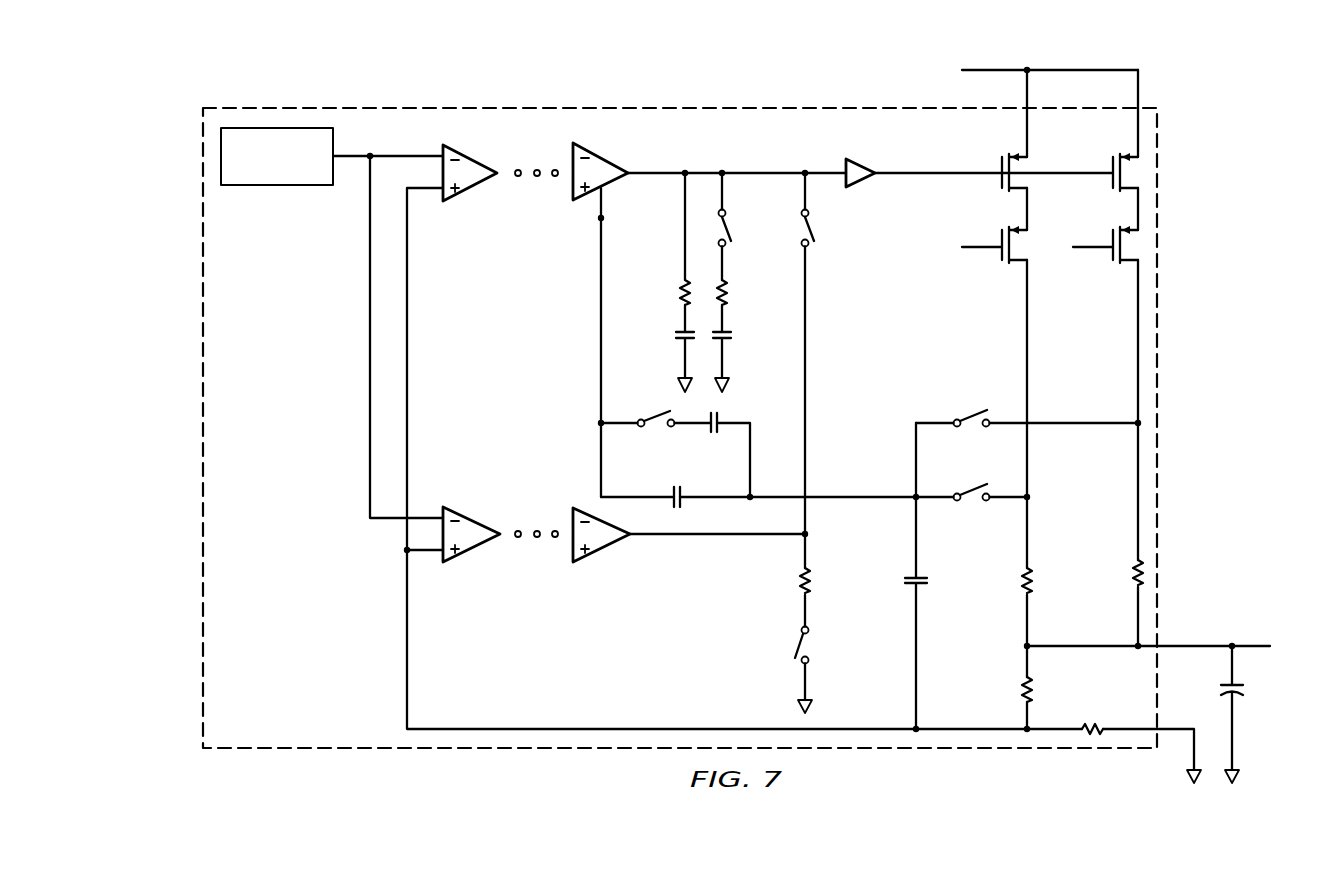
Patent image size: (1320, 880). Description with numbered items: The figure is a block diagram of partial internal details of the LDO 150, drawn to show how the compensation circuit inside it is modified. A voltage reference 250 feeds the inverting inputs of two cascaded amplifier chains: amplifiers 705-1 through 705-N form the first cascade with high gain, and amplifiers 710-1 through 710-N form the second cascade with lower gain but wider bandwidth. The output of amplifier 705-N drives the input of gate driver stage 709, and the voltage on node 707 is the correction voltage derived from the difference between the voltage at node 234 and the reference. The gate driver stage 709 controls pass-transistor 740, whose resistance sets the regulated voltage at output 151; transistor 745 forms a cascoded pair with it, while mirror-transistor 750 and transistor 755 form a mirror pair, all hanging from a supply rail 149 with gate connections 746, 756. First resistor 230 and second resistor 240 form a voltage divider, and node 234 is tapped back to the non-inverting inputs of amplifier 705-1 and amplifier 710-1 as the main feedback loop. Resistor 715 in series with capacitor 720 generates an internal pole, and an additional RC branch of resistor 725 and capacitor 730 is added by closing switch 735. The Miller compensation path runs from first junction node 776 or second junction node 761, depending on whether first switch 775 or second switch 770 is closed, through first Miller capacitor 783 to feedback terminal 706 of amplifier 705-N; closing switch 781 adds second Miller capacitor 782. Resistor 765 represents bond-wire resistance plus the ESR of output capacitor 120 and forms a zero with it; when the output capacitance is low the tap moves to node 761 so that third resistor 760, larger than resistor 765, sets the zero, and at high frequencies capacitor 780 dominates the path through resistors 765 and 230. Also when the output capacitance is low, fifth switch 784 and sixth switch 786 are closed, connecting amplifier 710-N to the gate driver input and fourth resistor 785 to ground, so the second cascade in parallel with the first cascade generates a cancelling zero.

The LDO 150 is at (415, 106).
The voltage reference 250 is at (273, 186).
The amplifier 705-1 is at (490, 146).
The amplifier 705-N is at (618, 146).
The feedback terminal 706 is at (600, 219).
The node 707 is at (806, 170).
The gate driver stage 709 is at (862, 164).
The resistor 715 is at (683, 292).
The capacitor 720 is at (676, 336).
The resistor 725 is at (726, 292).
The capacitor 730 is at (731, 336).
The switch 735 is at (731, 230).
The fifth switch 784 is at (814, 230).
The supply voltage node 149 is at (981, 70).
The pass-transistor 740 is at (1000, 166).
The mirror-transistor 750 is at (1111, 166).
The gate terminal 746 is at (981, 246).
The transistor 745 is at (1000, 257).
The gate terminal 756 is at (1091, 246).
The transistor 755 is at (1111, 257).
The switch 781 is at (656, 410).
The second Miller capacitor 782 is at (715, 434).
The first Miller capacitor 783 is at (676, 486).
The second switch 770 is at (972, 412).
The first switch 775 is at (972, 486).
The first junction node 776 is at (1030, 495).
The second junction node 761 is at (1135, 421).
The amplifier 710-1 is at (470, 549).
The amplifier 710-N is at (600, 553).
The fourth resistor 785 is at (802, 581).
The sixth switch 786 is at (795, 646).
The capacitor 780 is at (906, 580).
The resistor 765 is at (1022, 580).
The third resistor 760 is at (1133, 578).
The first resistor 230 is at (1022, 688).
The node 234 is at (1032, 727).
The second resistor 240 is at (1093, 727).
The output 151 is at (1233, 644).
The output capacitor 120 is at (1245, 690).